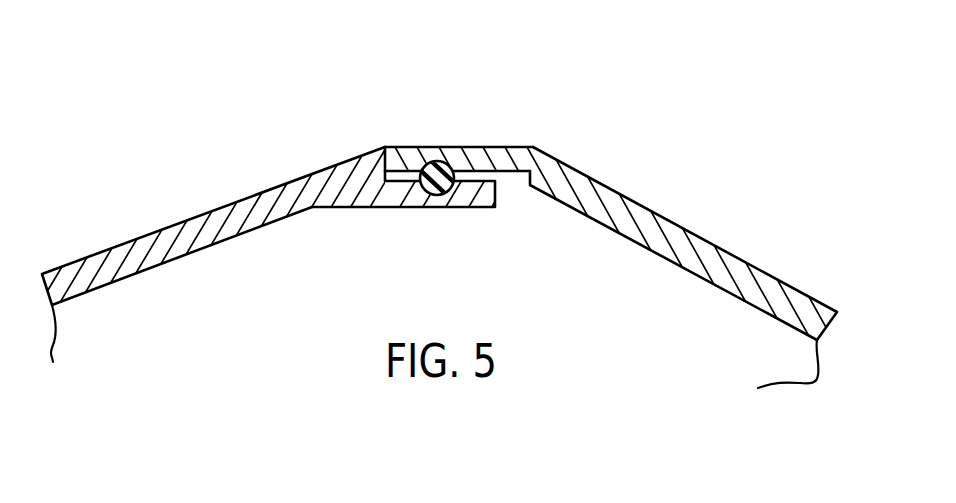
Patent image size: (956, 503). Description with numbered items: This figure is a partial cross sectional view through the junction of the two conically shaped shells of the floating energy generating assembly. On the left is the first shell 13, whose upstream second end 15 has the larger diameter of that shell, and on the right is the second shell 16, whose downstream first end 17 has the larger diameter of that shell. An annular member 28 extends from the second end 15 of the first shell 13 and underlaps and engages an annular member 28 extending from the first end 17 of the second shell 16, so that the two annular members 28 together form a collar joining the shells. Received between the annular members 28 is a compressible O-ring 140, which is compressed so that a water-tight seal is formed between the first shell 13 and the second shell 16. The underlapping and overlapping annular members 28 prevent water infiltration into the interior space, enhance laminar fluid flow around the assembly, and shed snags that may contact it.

The first shell 13 is at (222, 207).
The second end 15 is at (276, 148).
The second shell 16 is at (705, 242).
The first end 17 is at (690, 168).
The annular member 28 is at (473, 147).
The O-ring 140 is at (433, 162).